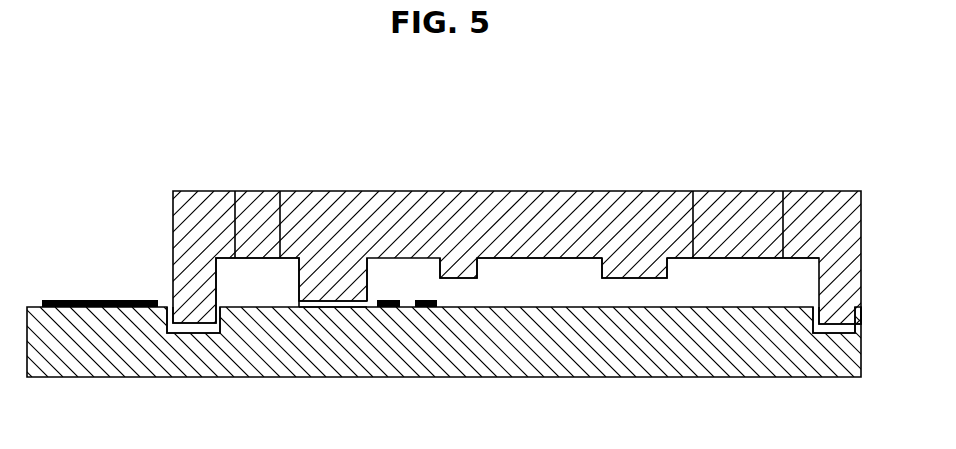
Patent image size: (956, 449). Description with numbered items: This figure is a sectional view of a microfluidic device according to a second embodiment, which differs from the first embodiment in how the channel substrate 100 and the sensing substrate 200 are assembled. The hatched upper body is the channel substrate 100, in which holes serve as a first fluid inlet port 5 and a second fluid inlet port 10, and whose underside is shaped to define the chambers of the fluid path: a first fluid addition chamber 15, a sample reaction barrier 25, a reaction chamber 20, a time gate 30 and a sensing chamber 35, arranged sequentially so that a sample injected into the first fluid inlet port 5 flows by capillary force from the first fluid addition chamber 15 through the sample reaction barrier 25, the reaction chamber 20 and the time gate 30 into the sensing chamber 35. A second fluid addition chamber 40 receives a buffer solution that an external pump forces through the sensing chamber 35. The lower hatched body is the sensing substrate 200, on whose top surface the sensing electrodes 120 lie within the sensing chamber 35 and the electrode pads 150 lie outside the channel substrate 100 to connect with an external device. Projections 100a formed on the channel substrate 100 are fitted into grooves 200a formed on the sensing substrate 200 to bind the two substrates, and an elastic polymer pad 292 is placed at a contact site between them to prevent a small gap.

The first fluid inlet port 5 is at (737, 200).
The second fluid inlet port 10 is at (257, 200).
The first fluid addition chamber 15 is at (802, 262).
The reaction chamber 20 is at (560, 272).
The sample reaction barrier 25 is at (632, 280).
The time gate 30 is at (455, 280).
The sensing chamber 35 is at (377, 303).
The second fluid addition chamber 40 is at (219, 290).
The channel substrate 100 is at (536, 236).
The projections 100a is at (202, 321).
The sensing electrodes 120 is at (390, 299).
The electrode pads 150 is at (100, 299).
The sensing substrate 200 is at (536, 357).
The grooves 200a is at (199, 334).
The elastic polymer pad 292 is at (338, 299).